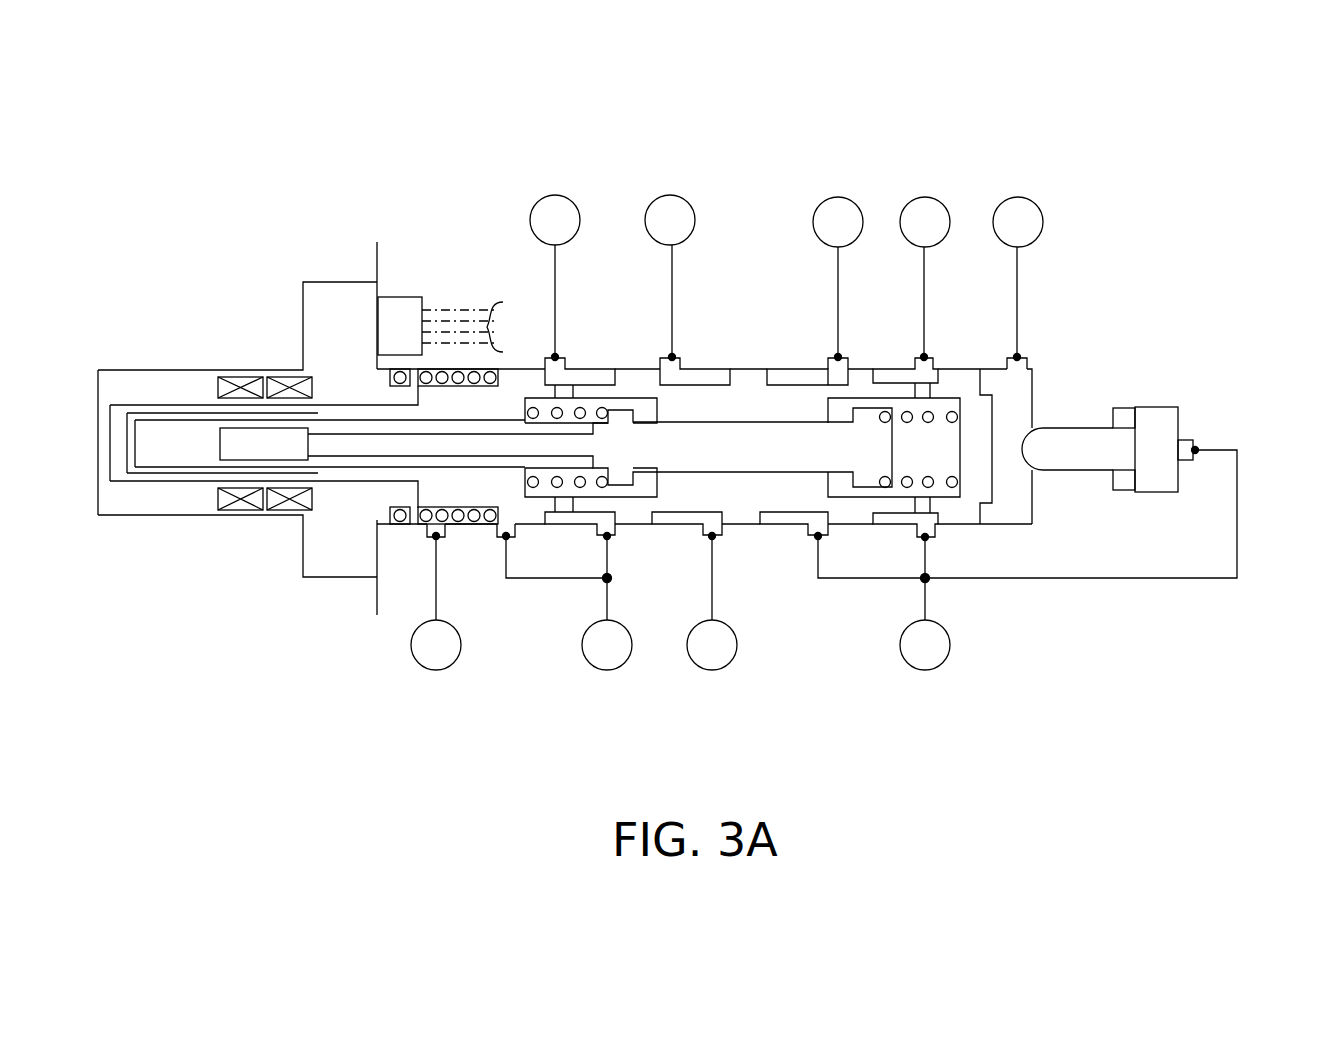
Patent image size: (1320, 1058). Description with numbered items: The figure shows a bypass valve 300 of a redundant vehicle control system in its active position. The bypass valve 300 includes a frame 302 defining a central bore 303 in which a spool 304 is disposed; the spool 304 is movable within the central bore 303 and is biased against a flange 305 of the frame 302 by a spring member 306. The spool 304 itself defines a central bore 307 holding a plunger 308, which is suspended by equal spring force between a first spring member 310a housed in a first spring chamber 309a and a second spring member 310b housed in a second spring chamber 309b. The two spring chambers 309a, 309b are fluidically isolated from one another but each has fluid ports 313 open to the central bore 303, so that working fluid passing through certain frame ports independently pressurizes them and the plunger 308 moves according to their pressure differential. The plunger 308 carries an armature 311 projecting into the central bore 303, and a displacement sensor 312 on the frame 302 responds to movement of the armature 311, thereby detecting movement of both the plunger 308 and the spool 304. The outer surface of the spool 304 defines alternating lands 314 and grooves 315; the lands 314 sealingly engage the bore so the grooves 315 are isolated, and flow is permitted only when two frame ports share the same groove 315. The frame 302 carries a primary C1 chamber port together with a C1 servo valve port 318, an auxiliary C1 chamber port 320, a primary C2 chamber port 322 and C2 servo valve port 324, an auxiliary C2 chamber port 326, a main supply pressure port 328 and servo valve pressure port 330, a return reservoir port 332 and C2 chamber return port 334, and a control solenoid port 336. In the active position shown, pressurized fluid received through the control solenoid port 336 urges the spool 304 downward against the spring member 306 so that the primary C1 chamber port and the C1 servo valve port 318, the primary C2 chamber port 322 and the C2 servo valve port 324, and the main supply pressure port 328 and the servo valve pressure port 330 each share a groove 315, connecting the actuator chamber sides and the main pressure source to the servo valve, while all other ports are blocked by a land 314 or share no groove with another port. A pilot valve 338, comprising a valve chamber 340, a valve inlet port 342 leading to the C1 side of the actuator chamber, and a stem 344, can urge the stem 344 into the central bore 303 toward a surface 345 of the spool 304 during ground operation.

The bypass valve 300 is at (1140, 179).
The frame 302 is at (1032, 385).
The central bore 303 is at (1030, 507).
The spool 304 is at (743, 525).
The flange 305 is at (347, 285).
The spring member 306 is at (457, 525).
The central bore 307 is at (744, 422).
The plunger 308 is at (782, 438).
The first spring chamber 309a is at (919, 404).
The second spring chamber 309b is at (538, 367).
The first spring member 310a is at (884, 412).
The second spring member 310b is at (530, 412).
The armature 311 is at (250, 438).
The displacement sensor 312 is at (222, 385).
The fluid ports 313 is at (567, 505).
The lands 314 is at (633, 524).
The grooves 315 is at (704, 368).
The C1 servo valve port 318 is at (925, 357).
The auxiliary C1 chamber port 320 is at (813, 540).
The primary C2 chamber port 322 is at (605, 537).
The C2 servo valve port 324 is at (555, 357).
The auxiliary C2 chamber port 326 is at (840, 357).
The main supply pressure port 328 is at (710, 537).
The servo valve pressure port 330 is at (673, 355).
The return reservoir port 332 is at (432, 537).
The C2 chamber return port 334 is at (503, 537).
The control solenoid port 336 is at (1020, 358).
The pilot valve 338 is at (1163, 441).
The valve chamber 340 is at (1127, 487).
The valve inlet port 342 is at (1195, 450).
The stem 344 is at (1085, 437).
The surface 345 is at (992, 487).